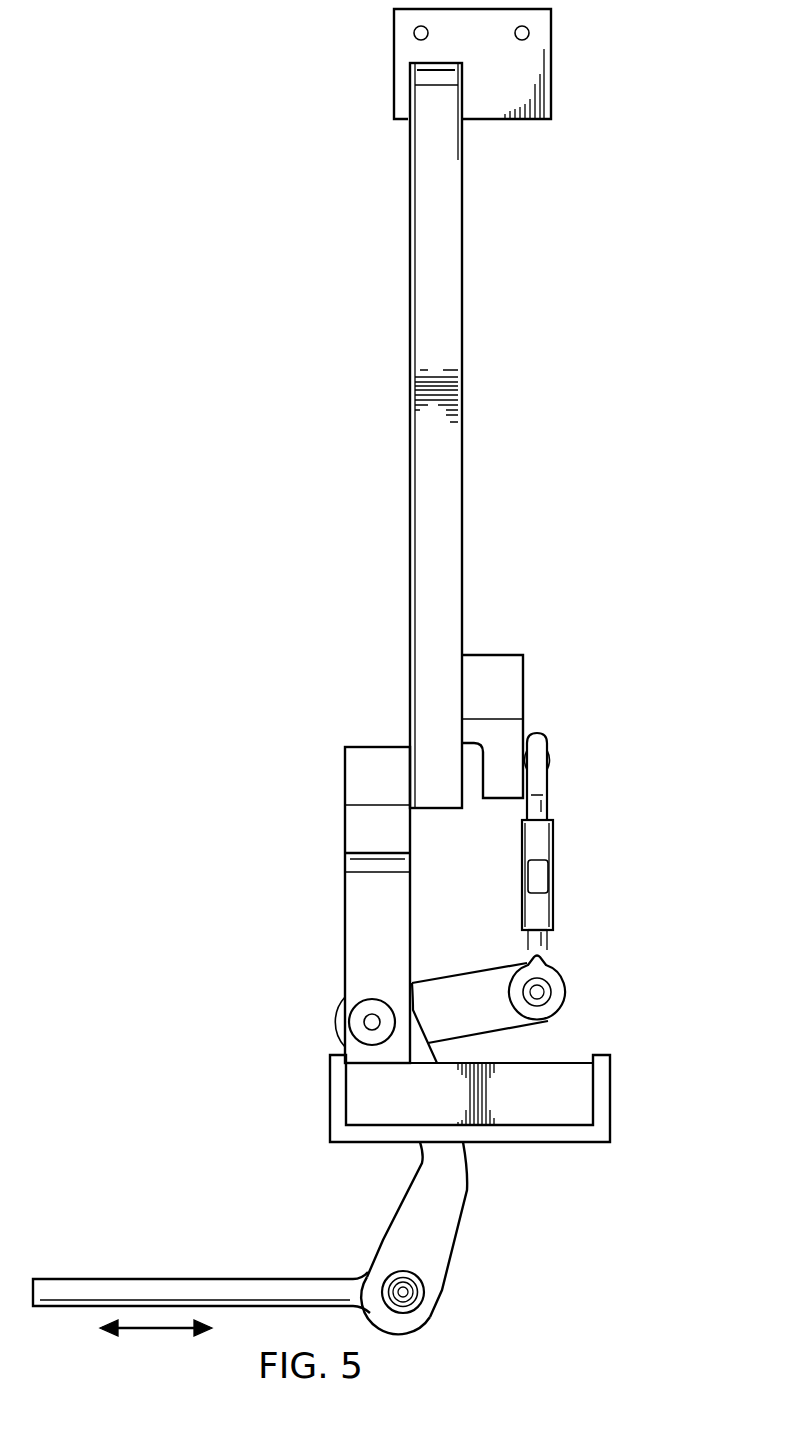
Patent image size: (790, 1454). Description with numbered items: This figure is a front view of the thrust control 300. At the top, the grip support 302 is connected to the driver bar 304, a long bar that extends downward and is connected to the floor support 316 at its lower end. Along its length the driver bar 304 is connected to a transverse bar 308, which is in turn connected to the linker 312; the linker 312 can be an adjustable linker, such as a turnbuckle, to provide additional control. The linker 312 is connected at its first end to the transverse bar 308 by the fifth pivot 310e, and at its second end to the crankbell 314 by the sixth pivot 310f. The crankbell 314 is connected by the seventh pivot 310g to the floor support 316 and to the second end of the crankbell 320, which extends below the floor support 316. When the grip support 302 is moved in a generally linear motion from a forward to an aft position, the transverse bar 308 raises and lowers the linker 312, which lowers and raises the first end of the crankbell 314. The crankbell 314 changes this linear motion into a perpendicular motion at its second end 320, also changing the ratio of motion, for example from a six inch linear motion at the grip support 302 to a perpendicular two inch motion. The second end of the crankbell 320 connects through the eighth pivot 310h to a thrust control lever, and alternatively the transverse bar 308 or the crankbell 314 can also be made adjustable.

The thrust control 300 is at (387, 676).
The grip support 302 is at (551, 63).
The driver bar 304 is at (462, 288).
The transverse bar 308 is at (523, 683).
The fifth pivot 310e is at (551, 760).
The linker 312 is at (553, 878).
The crankbell 314 is at (478, 970).
The sixth pivot 310f is at (556, 1004).
The seventh pivot 310g is at (372, 1022).
The floor support 316 is at (612, 1096).
The second end of the crankbell 320 is at (455, 1248).
The eighth pivot 310h is at (403, 1292).